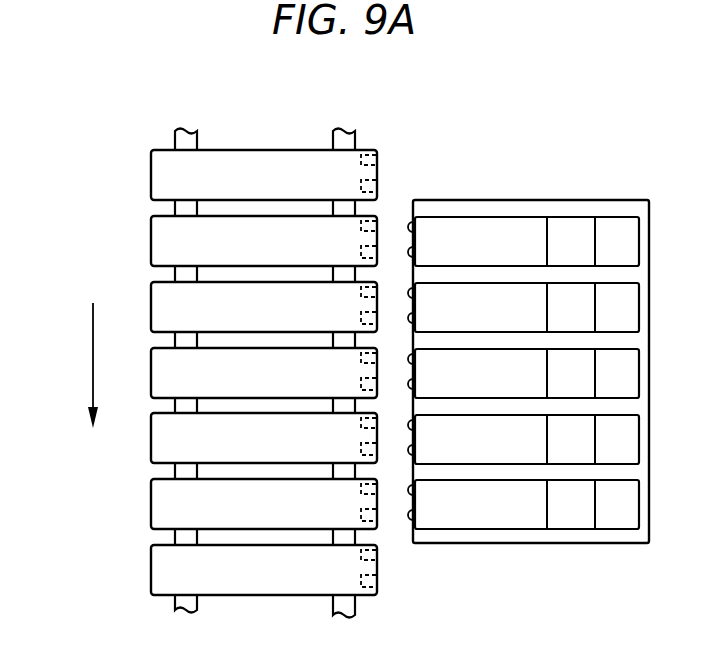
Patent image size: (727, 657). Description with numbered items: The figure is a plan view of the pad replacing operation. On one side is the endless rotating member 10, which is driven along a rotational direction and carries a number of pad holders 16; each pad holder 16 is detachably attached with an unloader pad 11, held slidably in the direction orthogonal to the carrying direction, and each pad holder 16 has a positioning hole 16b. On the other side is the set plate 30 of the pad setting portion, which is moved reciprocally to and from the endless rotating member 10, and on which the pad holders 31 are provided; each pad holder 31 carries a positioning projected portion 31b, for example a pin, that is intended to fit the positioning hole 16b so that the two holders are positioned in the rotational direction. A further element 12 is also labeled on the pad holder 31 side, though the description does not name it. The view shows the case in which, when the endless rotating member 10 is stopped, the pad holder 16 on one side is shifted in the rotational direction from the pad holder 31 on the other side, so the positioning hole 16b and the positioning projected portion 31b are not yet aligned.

The endless rotating member 10 is at (114, 181).
The unloader pad 11 is at (283, 232).
The pad holder 16 is at (233, 231).
The positioning hole 16b is at (378, 225).
The set plate 30 is at (518, 540).
The pad holder 31 is at (498, 237).
The positioning projected portion 31b is at (405, 228).
The compartment / chip region 12 is at (576, 236).